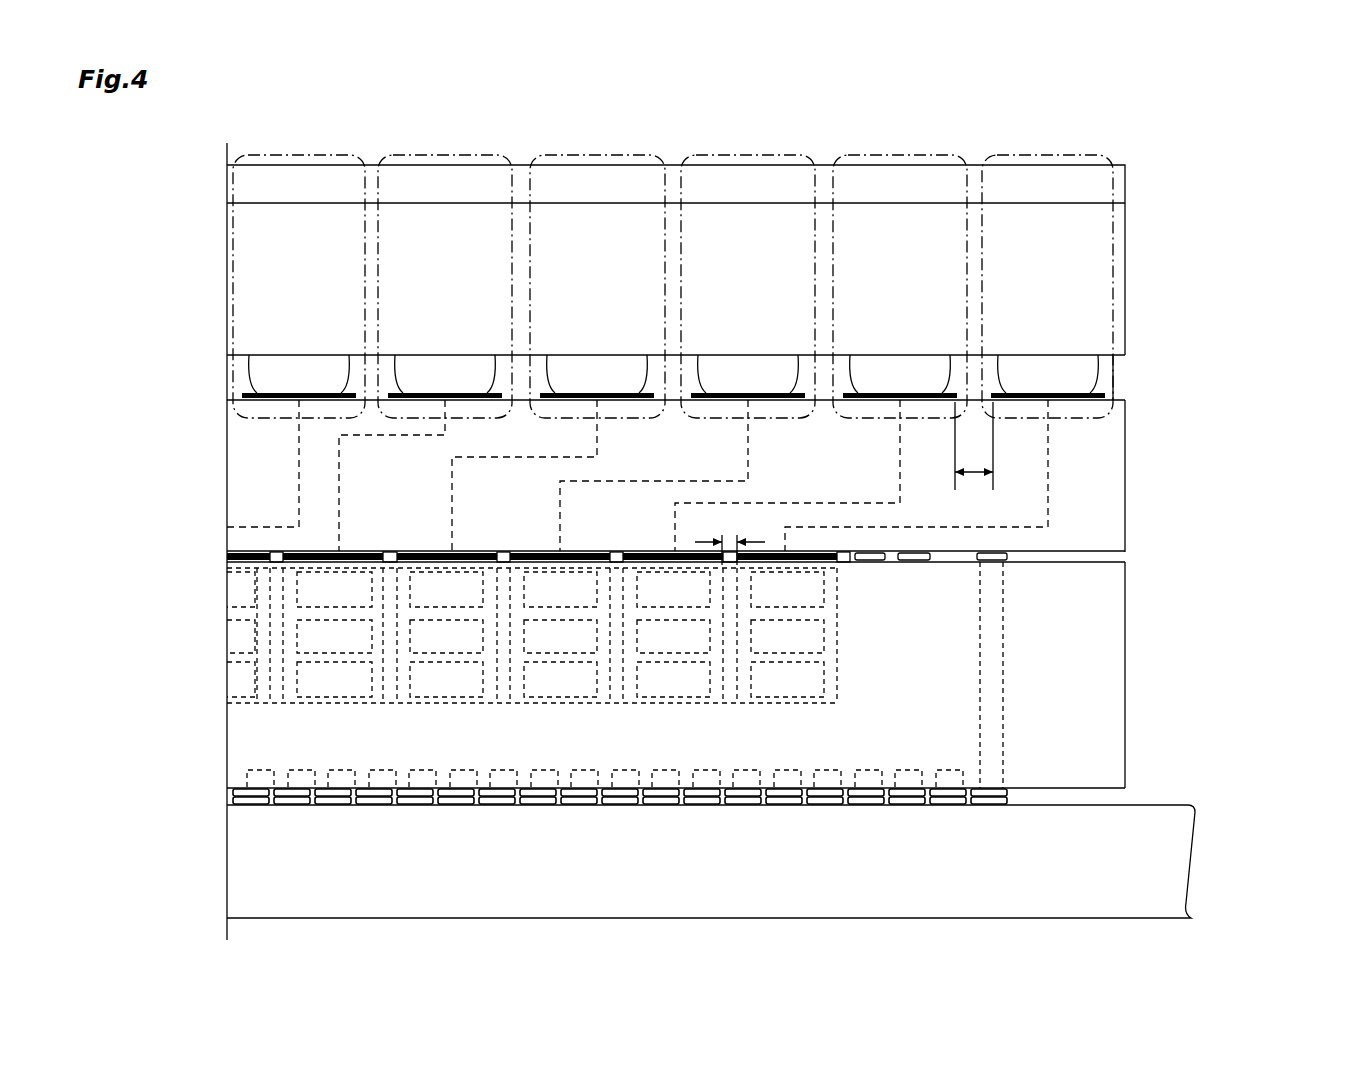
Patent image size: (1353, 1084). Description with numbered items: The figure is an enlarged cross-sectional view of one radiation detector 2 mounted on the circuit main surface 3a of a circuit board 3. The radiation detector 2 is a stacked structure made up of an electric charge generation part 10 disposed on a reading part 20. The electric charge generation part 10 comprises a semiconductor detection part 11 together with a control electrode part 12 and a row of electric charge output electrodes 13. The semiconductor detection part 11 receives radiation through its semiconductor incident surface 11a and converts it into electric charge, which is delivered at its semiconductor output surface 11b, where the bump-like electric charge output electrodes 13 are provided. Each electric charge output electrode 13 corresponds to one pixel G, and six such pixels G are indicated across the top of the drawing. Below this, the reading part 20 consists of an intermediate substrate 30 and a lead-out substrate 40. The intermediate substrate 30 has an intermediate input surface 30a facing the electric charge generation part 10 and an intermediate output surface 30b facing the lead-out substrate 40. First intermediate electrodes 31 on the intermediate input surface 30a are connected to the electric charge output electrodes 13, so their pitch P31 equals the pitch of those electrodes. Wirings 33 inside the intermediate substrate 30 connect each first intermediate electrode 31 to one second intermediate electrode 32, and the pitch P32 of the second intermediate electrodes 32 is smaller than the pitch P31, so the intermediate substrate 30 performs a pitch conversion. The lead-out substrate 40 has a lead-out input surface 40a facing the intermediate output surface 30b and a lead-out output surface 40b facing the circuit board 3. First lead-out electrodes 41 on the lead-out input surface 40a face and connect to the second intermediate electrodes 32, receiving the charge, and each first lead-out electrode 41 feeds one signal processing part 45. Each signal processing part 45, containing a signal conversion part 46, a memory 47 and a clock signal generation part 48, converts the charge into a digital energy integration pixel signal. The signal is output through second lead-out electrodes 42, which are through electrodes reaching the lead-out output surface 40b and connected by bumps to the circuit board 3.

The radiation detector 2 is at (1242, 127).
The circuit board 3 is at (1194, 856).
The circuit main surface 3a is at (1178, 804).
The electric charge generation part 10 is at (1204, 195).
The semiconductor detection part 11 is at (1128, 300).
The semiconductor incident surface 11a is at (248, 200).
The semiconductor output surface 11b is at (232, 357).
The control electrode part 12 is at (1128, 185).
The electric charge output electrode 13 is at (1113, 368).
The reading part 20 is at (1281, 415).
The intermediate substrate 30 is at (1136, 493).
The intermediate input surface 30a is at (1128, 400).
The intermediate output surface 30b is at (1128, 552).
The first intermediate electrode 31 is at (1102, 388).
The second intermediate electrode 32 is at (243, 565).
The wiring 33 is at (295, 497).
The lead-out substrate 40 is at (1136, 745).
The lead-out input surface 40a is at (1128, 563).
The lead-out output surface 40b is at (1125, 792).
The first lead-out electrode 41 is at (237, 552).
The second lead-out electrode 42 is at (1010, 792).
The signal processing part 45 is at (245, 705).
The signal conversion part 46 is at (806, 599).
The memory 47 is at (806, 646).
The clock signal generation part 48 is at (806, 689).
The pixel G is at (323, 153).
The pitch of first intermediate electrodes P31 is at (975, 476).
The pitch of second intermediate electrodes P32 is at (734, 538).